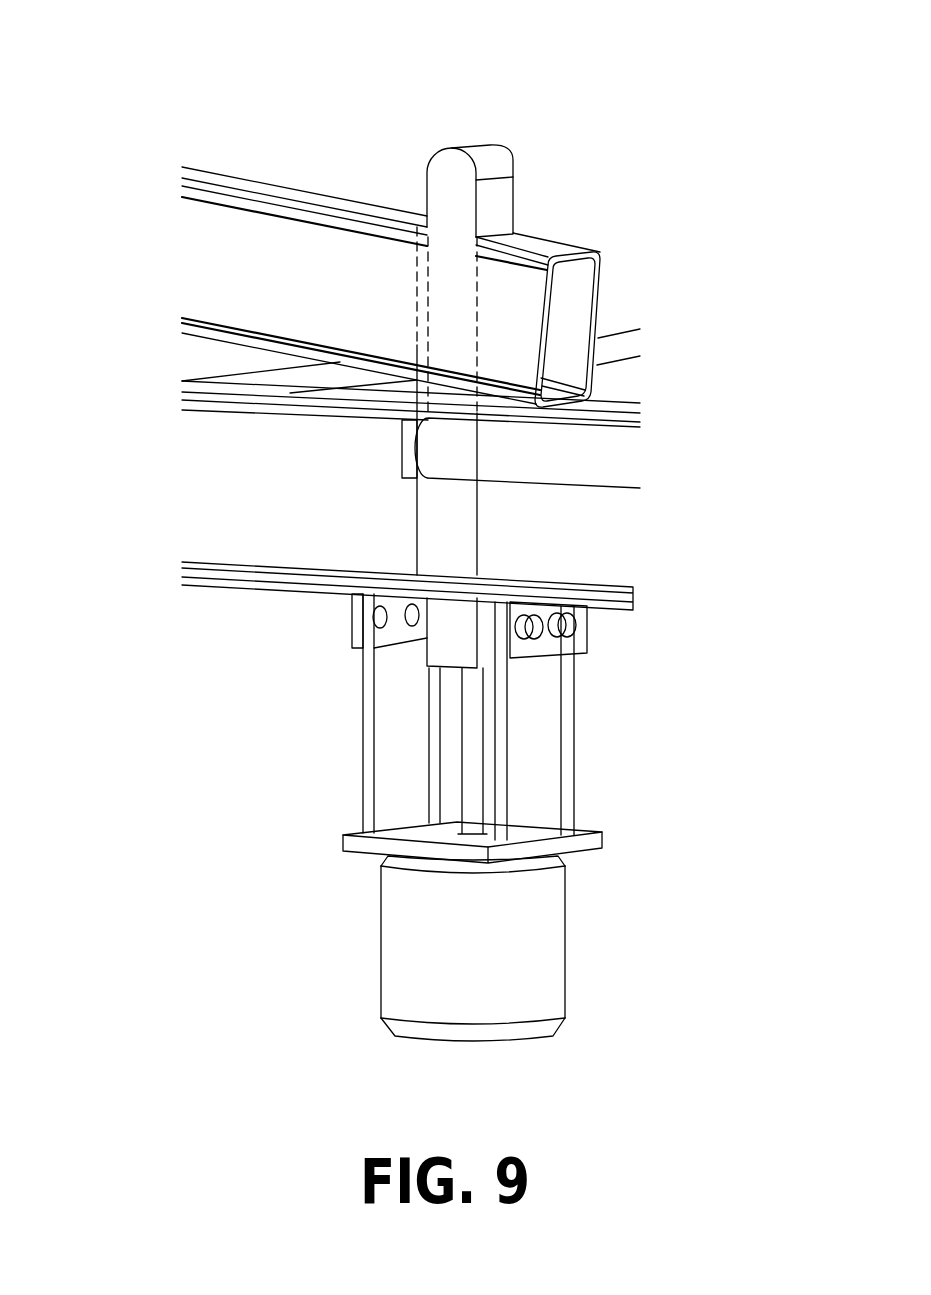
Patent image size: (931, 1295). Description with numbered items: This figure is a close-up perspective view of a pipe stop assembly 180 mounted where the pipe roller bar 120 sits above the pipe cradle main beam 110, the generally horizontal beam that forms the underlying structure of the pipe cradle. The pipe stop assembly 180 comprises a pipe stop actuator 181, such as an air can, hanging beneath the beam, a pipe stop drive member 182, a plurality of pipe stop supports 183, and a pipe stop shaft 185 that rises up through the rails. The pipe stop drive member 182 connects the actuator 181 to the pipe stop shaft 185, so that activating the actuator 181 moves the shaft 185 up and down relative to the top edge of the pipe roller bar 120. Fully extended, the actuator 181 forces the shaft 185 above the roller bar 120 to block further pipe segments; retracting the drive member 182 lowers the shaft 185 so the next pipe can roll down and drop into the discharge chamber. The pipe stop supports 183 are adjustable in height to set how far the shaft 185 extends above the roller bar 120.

The pipe cradle main beam 110 is at (276, 557).
The pipe roller bar 120 is at (264, 245).
The pipe stop assembly 180 is at (344, 870).
The pipe stop actuator 181 is at (381, 963).
The pipe stop drive member 182 is at (469, 810).
The pipe stop supports 183 is at (362, 740).
The pipe stop shaft 185 is at (432, 166).